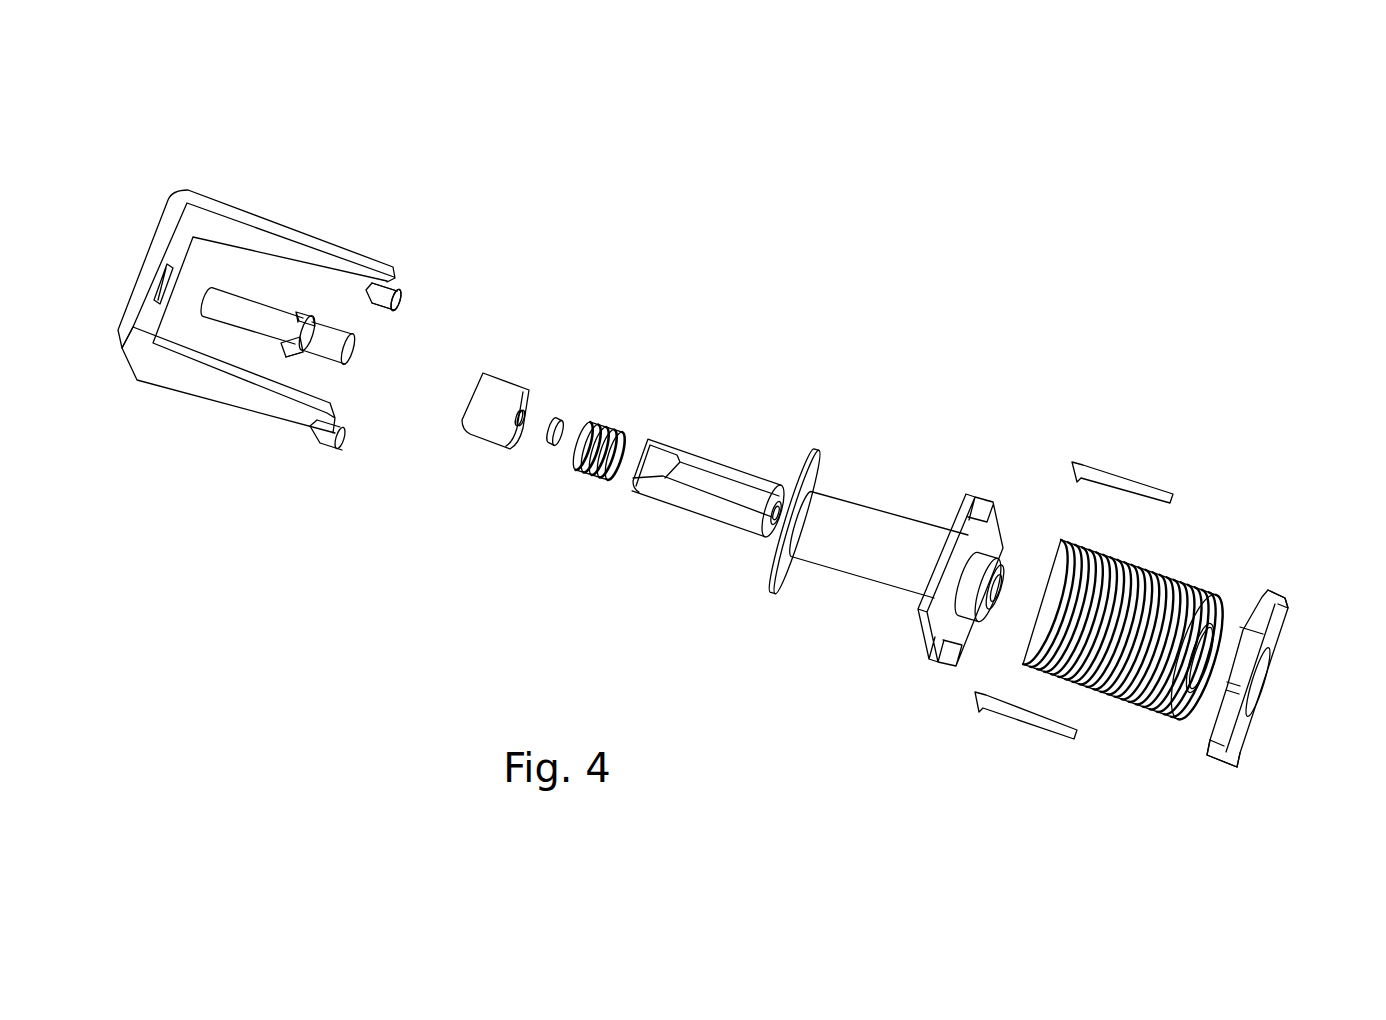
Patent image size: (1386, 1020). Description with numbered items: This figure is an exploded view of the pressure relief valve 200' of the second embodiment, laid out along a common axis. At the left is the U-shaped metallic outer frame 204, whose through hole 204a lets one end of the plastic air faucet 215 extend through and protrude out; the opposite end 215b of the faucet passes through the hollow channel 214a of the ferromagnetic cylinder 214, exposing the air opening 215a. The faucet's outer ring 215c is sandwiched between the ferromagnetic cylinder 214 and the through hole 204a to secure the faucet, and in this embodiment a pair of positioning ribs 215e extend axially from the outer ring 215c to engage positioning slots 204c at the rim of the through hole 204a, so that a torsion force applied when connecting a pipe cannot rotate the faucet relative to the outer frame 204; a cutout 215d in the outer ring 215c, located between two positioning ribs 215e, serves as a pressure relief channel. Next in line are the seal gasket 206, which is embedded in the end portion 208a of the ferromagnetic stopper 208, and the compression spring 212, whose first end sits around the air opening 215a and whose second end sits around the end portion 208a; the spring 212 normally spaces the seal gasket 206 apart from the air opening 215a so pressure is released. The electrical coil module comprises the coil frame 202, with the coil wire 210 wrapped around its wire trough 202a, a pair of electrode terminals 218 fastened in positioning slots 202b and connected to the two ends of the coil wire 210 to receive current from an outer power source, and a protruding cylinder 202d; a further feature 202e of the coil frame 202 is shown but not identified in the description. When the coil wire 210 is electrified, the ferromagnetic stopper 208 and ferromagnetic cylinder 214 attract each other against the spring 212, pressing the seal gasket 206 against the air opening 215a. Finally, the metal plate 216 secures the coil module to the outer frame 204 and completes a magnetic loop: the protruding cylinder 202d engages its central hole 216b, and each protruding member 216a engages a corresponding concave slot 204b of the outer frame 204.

The pressure relief valve 200' is at (765, 213).
The coil frame 202 is at (808, 452).
The wire trough 202a is at (892, 515).
The positioning slots 202b is at (980, 497).
The protruding cylinder 202d is at (1000, 557).
The bore 202e is at (990, 617).
The outer frame 204 is at (183, 195).
The through hole 204a is at (163, 272).
The concave slot 204b is at (328, 452).
The positioning slot 204c is at (160, 345).
The seal gasket 206 is at (556, 420).
The ferromagnetic stopper 208 is at (718, 478).
The end portion 208a is at (667, 443).
The coil wire 210 is at (1120, 698).
The spring 212 is at (606, 420).
The ferromagnetic cylinder 214 is at (497, 397).
The hollow channel 214a is at (528, 420).
The plastic air faucet 215 is at (224, 306).
The air opening 215a is at (375, 292).
The other end 215b is at (330, 336).
The outer ring 215c is at (300, 350).
The cutout 215d is at (290, 352).
The positioning ribs 215e is at (298, 320).
The metal plate 216 is at (1245, 741).
The protruding member 216a is at (1287, 590).
The central hole 216b is at (1275, 672).
The electrode terminals 218 is at (1140, 482).